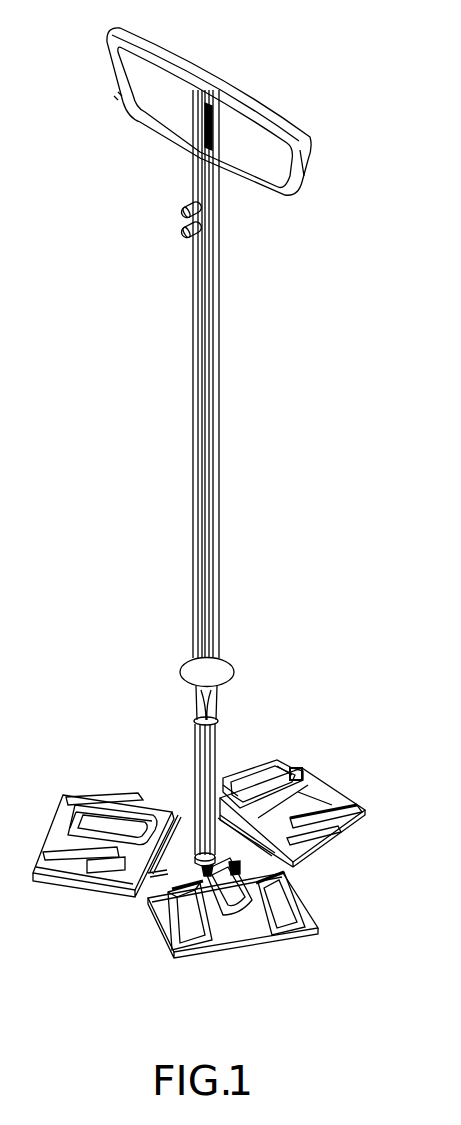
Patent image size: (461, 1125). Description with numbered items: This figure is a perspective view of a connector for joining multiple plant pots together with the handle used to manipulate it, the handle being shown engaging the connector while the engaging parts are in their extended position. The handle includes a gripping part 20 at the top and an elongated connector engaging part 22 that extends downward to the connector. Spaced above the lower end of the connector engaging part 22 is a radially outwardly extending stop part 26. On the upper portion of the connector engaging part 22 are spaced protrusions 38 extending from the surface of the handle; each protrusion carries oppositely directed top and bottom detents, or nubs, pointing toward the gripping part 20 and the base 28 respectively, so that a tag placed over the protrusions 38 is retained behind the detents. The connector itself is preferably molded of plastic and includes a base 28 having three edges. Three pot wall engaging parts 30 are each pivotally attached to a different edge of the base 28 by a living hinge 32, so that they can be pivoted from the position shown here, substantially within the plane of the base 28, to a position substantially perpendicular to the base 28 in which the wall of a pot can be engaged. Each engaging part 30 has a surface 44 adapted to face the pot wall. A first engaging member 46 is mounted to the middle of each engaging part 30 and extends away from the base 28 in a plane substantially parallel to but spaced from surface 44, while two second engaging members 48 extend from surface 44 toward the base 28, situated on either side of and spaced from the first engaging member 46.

The gripping part 20 is at (264, 103).
The connector engaging part 22 is at (192, 367).
The stop part 26 is at (225, 656).
The base 28 is at (196, 866).
The pot wall engaging part 30 is at (343, 860).
The living hinge 32 is at (190, 820).
The protrusions 38 is at (182, 235).
The surface 44 is at (63, 830).
The first engaging member 46 is at (292, 793).
The second engaging members 48 is at (122, 795).